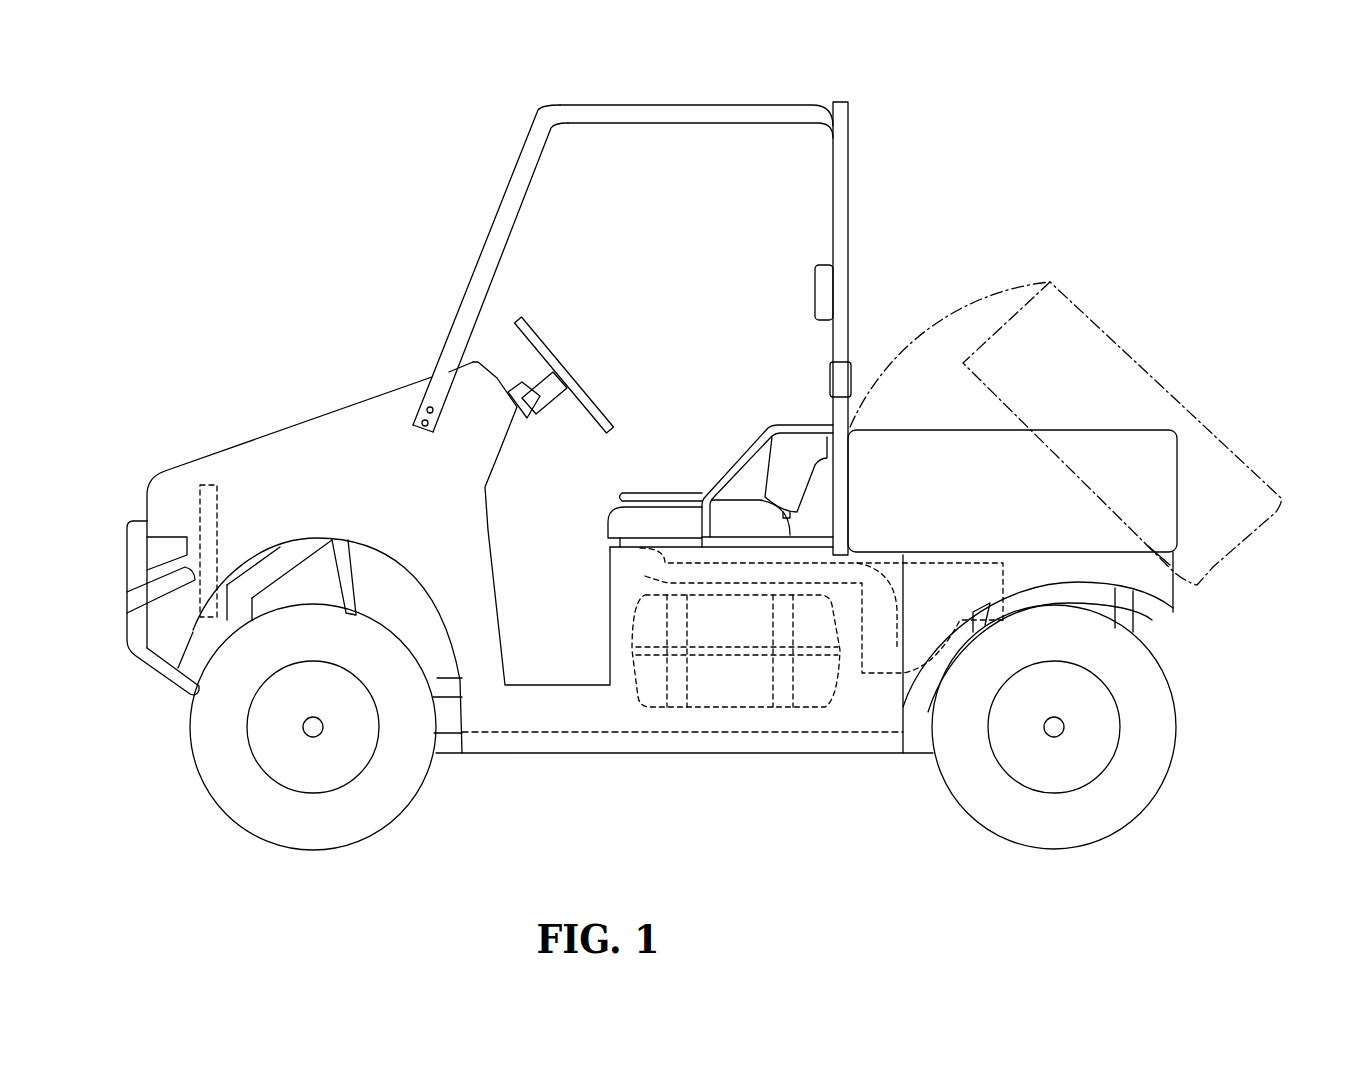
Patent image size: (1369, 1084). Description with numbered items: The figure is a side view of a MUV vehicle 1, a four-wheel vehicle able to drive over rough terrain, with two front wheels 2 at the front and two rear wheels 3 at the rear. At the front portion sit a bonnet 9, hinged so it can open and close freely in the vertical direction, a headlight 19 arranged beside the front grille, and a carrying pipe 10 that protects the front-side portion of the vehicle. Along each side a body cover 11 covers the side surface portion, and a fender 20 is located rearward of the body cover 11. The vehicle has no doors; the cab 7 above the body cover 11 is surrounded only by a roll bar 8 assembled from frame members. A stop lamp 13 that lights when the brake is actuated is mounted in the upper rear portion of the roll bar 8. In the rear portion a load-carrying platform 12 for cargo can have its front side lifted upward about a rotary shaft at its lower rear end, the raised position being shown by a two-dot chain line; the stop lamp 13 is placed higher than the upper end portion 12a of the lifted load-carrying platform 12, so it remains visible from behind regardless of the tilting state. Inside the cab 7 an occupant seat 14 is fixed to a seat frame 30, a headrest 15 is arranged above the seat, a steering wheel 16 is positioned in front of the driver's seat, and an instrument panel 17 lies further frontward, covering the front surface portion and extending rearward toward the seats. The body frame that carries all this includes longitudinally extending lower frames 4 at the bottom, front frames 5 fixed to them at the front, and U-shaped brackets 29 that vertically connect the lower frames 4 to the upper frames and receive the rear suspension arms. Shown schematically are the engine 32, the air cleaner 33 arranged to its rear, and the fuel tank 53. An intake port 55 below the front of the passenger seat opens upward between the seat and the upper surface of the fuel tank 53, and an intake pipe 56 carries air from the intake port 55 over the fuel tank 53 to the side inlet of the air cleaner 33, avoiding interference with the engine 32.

The MUV vehicle 1 is at (1129, 119).
The front wheel 2 is at (385, 805).
The rear wheel 3 is at (1125, 808).
The lower frame 4 is at (447, 745).
The front frame 5 is at (240, 618).
The cab 7 is at (661, 224).
The roll bar 8 is at (515, 163).
The bonnet 9 is at (297, 422).
The carrying pipe 10 is at (130, 553).
The body cover 11 is at (568, 718).
The load-carrying platform 12 is at (1117, 345).
The upper end portion of the load-carrying platform 12a is at (1050, 282).
The stop lamp 13 is at (850, 108).
The occupant seat 14 is at (788, 405).
The headrest 15 is at (815, 296).
The steering wheel 16 is at (545, 340).
The instrument panel 17 is at (490, 372).
The headlight 19 is at (175, 535).
The fender 20 is at (1157, 610).
The U-shaped bracket 29 is at (980, 620).
The seat frame 30 is at (851, 408).
The engine 32 is at (198, 497).
The air cleaner 33 is at (883, 677).
The fuel tank 53 is at (710, 700).
The intake port 55 is at (648, 540).
The intake pipe 56 is at (645, 572).